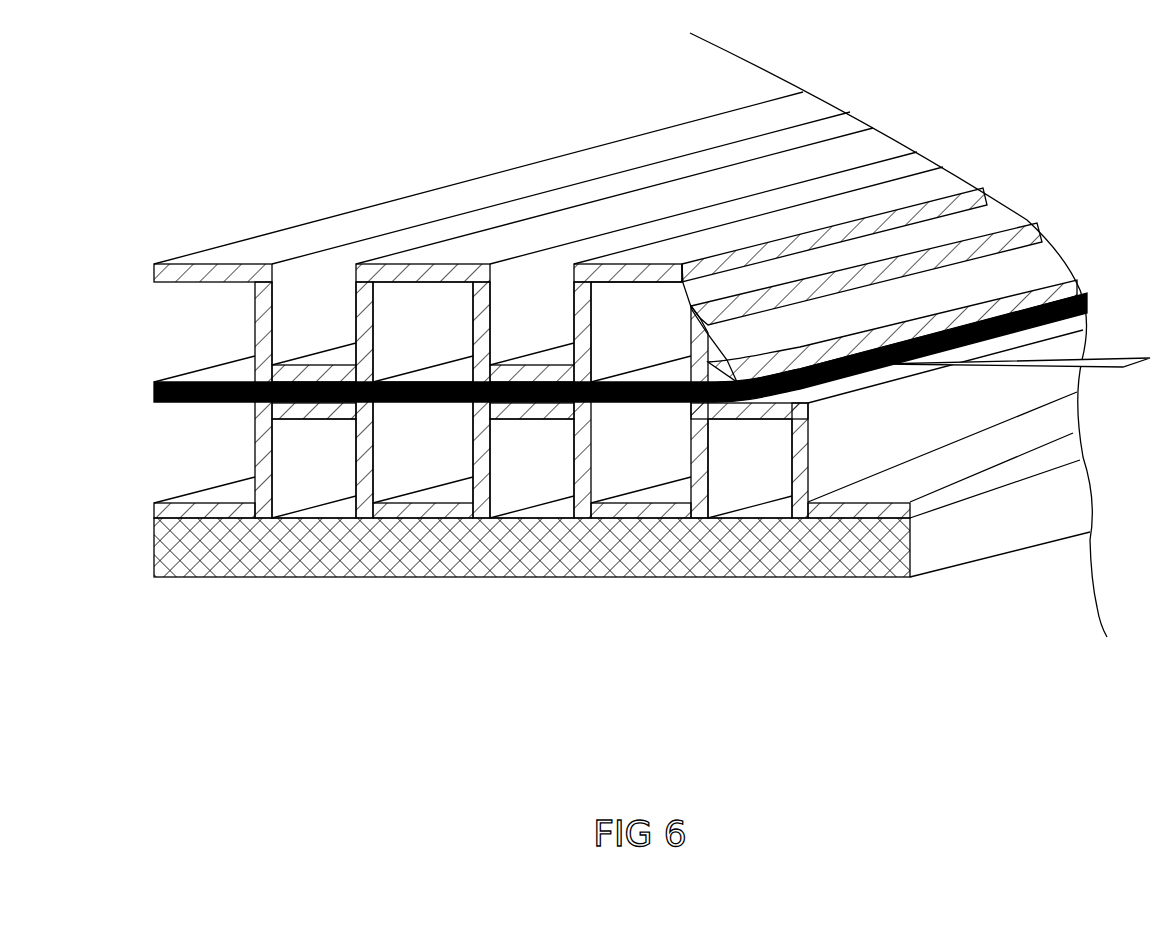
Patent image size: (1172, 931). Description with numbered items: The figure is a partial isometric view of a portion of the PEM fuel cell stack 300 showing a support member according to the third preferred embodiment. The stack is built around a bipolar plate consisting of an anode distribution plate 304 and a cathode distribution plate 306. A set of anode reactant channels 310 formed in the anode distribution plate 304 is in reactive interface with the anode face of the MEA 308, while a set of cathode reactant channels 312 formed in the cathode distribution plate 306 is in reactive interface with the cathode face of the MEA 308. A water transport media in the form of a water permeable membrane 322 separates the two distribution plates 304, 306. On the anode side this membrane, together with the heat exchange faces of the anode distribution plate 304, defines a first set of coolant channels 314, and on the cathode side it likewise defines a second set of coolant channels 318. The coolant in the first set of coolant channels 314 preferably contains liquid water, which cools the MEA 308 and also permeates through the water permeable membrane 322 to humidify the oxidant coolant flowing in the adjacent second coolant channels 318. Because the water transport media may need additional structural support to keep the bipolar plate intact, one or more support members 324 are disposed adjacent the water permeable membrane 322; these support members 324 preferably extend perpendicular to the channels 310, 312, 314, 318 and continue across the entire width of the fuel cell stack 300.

The PEM fuel cell stack 300 is at (892, 645).
The anode distribution plate 304 is at (210, 255).
The cathode distribution plate 306 is at (200, 497).
The MEA 308 is at (642, 548).
The anode reactant channels 310 is at (310, 287).
The cathode reactant channels 312 is at (312, 473).
The first set of coolant channels 314 is at (420, 317).
The second set of coolant channels 318 is at (425, 457).
The water permeable membrane 322 is at (193, 382).
The support member 324 is at (1115, 360).